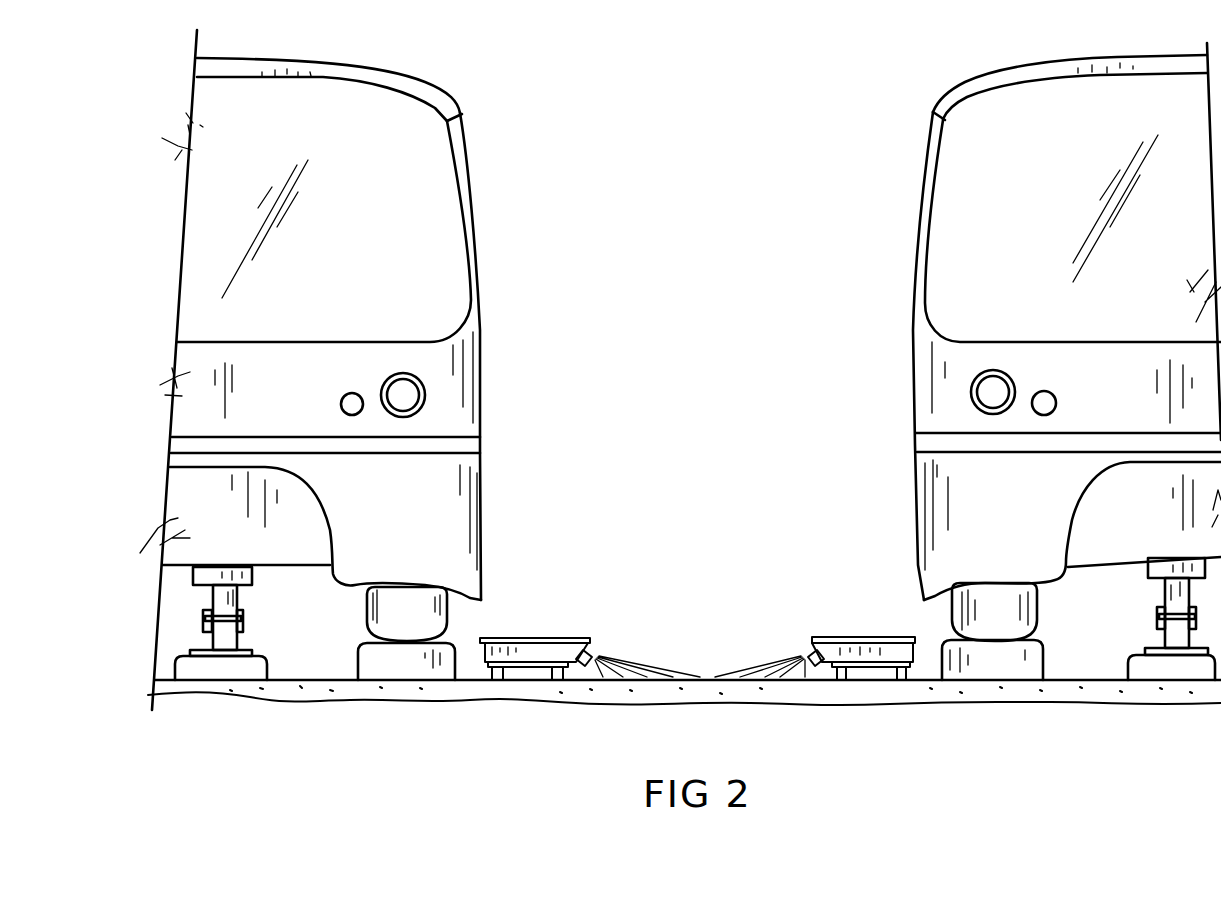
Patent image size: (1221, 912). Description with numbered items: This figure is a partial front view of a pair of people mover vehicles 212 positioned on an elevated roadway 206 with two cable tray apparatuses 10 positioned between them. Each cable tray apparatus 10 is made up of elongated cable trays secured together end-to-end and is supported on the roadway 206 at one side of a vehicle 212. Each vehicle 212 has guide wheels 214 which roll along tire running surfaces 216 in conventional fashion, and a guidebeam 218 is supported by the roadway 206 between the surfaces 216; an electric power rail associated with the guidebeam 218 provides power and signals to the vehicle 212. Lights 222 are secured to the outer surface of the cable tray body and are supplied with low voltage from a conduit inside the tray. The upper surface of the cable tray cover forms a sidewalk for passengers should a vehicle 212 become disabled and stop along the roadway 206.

The cable tray apparatus 10 is at (535, 615).
The roadway 206 is at (868, 692).
The vehicle 212 is at (458, 481).
The guide wheels 214 is at (420, 627).
The tire running surfaces 216 is at (405, 662).
The guidebeam 218 is at (228, 637).
The lights 222 is at (590, 652).